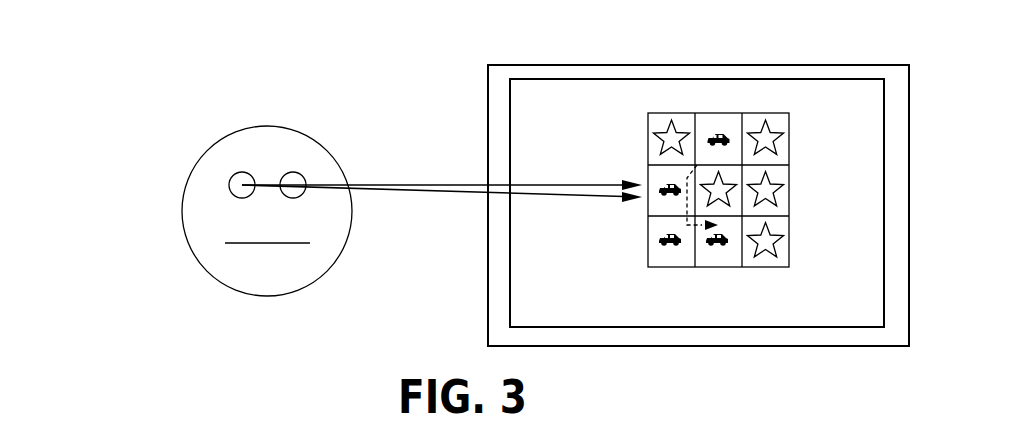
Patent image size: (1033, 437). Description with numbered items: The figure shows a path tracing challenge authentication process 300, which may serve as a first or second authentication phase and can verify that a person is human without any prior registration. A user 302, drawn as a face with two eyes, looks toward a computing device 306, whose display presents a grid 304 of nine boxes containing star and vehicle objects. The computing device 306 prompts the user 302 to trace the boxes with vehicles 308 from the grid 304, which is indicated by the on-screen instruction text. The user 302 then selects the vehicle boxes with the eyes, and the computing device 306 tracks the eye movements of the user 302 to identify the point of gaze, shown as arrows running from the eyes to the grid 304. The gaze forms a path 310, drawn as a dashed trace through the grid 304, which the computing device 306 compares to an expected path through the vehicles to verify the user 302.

The path tracing challenge authentication process 300 is at (130, 146).
The user 302 is at (323, 142).
The grid 304 is at (718, 112).
The computing device 306 is at (487, 90).
The boxes with vehicles 308 is at (877, 305).
The path 310 is at (712, 156).